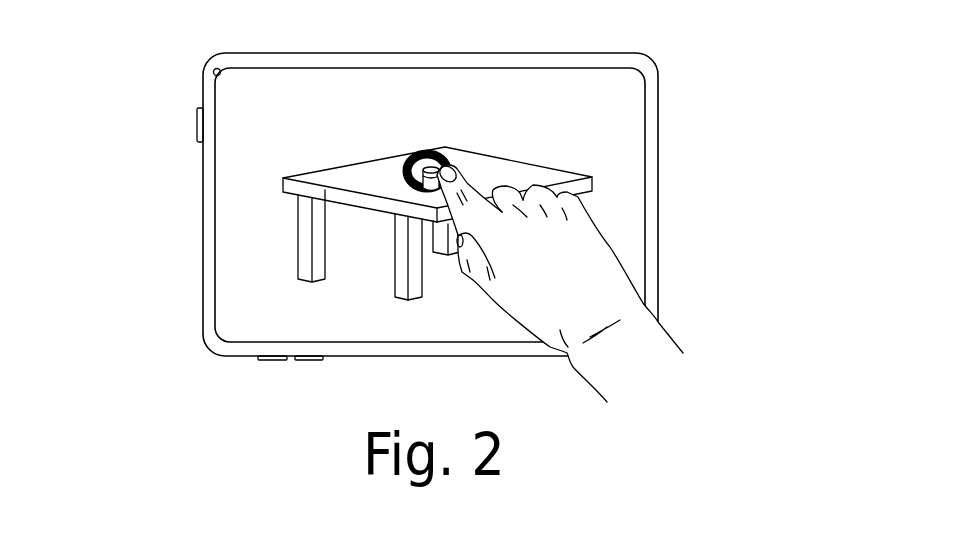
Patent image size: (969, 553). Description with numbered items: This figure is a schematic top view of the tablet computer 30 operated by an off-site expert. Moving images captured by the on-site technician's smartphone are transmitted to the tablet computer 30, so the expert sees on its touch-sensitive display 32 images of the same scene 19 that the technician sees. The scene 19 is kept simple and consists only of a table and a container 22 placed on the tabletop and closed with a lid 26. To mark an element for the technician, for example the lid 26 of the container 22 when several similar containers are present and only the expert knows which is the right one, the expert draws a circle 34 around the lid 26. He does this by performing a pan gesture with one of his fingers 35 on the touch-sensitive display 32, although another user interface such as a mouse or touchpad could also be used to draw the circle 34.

The scene 19 is at (255, 306).
The container 22 is at (421, 171).
The lid 26 is at (430, 151).
The tablet computer 30 is at (176, 197).
The touch-sensitive display 32 is at (235, 108).
The circle 34 is at (452, 160).
The finger 35 is at (452, 178).